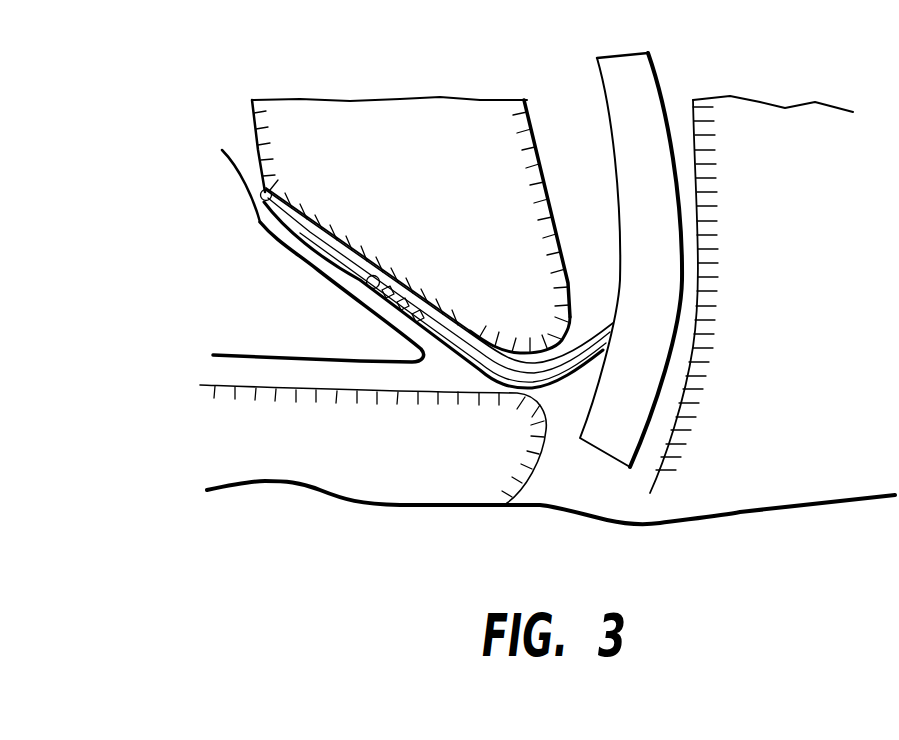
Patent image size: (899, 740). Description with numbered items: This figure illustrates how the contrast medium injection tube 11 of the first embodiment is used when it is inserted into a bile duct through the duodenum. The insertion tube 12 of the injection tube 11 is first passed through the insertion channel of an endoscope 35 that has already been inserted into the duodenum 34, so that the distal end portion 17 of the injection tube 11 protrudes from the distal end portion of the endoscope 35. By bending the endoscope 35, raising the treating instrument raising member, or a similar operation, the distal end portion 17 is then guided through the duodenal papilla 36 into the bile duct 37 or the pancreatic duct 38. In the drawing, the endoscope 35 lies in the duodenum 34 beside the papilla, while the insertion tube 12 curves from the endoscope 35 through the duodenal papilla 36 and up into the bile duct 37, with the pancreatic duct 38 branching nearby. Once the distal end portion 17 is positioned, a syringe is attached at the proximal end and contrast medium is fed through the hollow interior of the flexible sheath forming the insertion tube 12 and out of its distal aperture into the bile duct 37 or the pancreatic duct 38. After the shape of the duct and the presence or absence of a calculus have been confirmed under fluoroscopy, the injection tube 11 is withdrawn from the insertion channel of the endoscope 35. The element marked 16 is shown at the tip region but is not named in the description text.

The contrast medium injection tube 11 is at (577, 371).
The insertion tube 12 is at (450, 350).
The probe tip 16 is at (261, 201).
The distal end portion 17 is at (366, 291).
The duodenum 34 is at (560, 112).
The endoscope 35 is at (622, 67).
The duodenal papilla 36 is at (572, 327).
The bile duct 37 is at (247, 153).
The pancreatic duct 38 is at (235, 378).